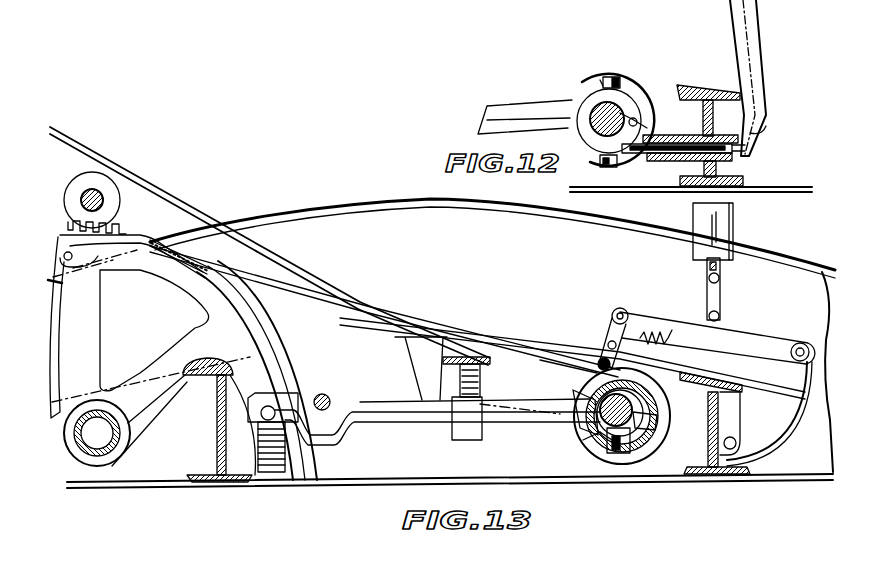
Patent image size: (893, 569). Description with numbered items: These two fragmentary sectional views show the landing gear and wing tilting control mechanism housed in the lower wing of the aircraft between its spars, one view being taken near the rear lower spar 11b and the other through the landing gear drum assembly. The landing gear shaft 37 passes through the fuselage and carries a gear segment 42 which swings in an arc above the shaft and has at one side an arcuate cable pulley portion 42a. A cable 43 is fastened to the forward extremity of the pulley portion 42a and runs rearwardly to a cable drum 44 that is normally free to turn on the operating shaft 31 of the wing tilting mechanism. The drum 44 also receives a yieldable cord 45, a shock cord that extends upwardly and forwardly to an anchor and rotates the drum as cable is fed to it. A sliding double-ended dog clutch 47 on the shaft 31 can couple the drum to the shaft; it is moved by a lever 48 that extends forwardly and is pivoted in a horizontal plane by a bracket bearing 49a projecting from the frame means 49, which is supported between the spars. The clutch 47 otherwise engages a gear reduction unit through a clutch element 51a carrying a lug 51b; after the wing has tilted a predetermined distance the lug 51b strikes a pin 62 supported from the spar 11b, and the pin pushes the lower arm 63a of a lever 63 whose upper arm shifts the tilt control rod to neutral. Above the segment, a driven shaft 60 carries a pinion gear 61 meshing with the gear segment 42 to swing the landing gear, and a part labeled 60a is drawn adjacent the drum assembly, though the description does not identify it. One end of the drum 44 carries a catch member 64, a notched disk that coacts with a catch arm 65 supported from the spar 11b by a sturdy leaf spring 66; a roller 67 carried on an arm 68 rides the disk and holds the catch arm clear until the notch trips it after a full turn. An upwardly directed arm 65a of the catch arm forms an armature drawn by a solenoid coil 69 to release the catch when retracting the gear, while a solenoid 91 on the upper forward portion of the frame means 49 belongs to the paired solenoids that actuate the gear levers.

In FIG. 12, the spar 11b is at (705, 90).
In FIG. 13, the operating shaft 31 is at (600, 432).
In FIG. 13, the landing gear shaft 37 is at (110, 458).
In FIG. 13, the gear segment 42 is at (200, 268).
In FIG. 13, the arcuate cable pulley portion 42a is at (145, 246).
In FIG. 13, the cable 43 is at (293, 285).
In FIG. 13, the cable drum 44 is at (652, 445).
In FIG. 13, the yieldable cord 45 is at (252, 232).
In FIG. 13, the dog clutch 47 is at (583, 438).
In FIG. 12, the lever 48 is at (542, 100).
In FIG. 13, the lever 48 is at (377, 410).
In FIG. 13, the frame means 49 is at (605, 412).
In FIG. 13, the bracket bearing 49a is at (477, 366).
In FIG. 12, the clutch element 51a is at (611, 78).
In FIG. 12, the lug 51b is at (636, 120).
In FIG. 13, the driven shaft 60 is at (99, 193).
In FIG. 13, the hub shaft 60a is at (672, 396).
In FIG. 13, the pinion gear 61 is at (77, 186).
In FIG. 12, the pin 62 is at (622, 165).
In FIG. 12, the lever 63 is at (752, 30).
In FIG. 12, the lower arm 63a is at (762, 132).
In FIG. 13, the catch member 64 is at (652, 440).
In FIG. 13, the catch arm 65 is at (740, 343).
In FIG. 13, the upwardly directed arm 65a is at (720, 300).
In FIG. 13, the leaf spring 66 is at (768, 449).
In FIG. 13, the roller 67 is at (597, 366).
In FIG. 13, the arm 68 is at (633, 301).
In FIG. 13, the solenoid coil 69 is at (733, 216).
In FIG. 13, the solenoid 91 is at (331, 389).